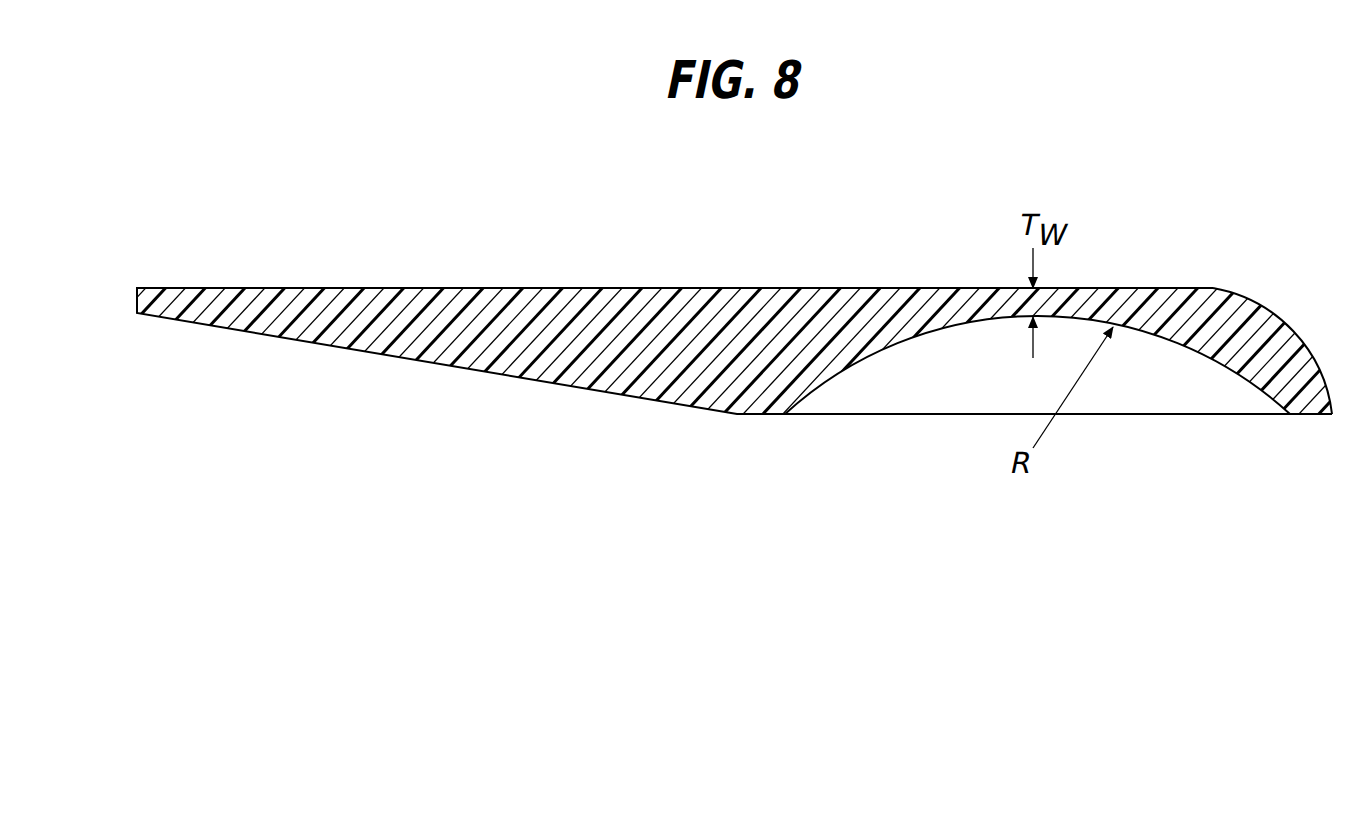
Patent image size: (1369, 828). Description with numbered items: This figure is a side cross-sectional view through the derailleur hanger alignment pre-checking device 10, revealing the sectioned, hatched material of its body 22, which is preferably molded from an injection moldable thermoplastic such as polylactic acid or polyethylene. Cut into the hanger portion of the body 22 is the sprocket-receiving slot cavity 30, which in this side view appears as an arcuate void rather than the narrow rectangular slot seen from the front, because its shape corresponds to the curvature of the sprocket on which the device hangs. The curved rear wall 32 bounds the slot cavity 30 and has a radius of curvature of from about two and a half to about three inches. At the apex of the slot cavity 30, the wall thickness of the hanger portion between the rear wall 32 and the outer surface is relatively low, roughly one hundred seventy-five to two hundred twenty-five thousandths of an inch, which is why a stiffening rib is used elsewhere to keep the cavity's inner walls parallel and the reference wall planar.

The derailleur hanger alignment pre-checking device 10 is at (902, 208).
The body 22 is at (533, 305).
The sprocket-receiving slot cavity 30 is at (903, 380).
The curved rear wall 32 is at (1218, 362).